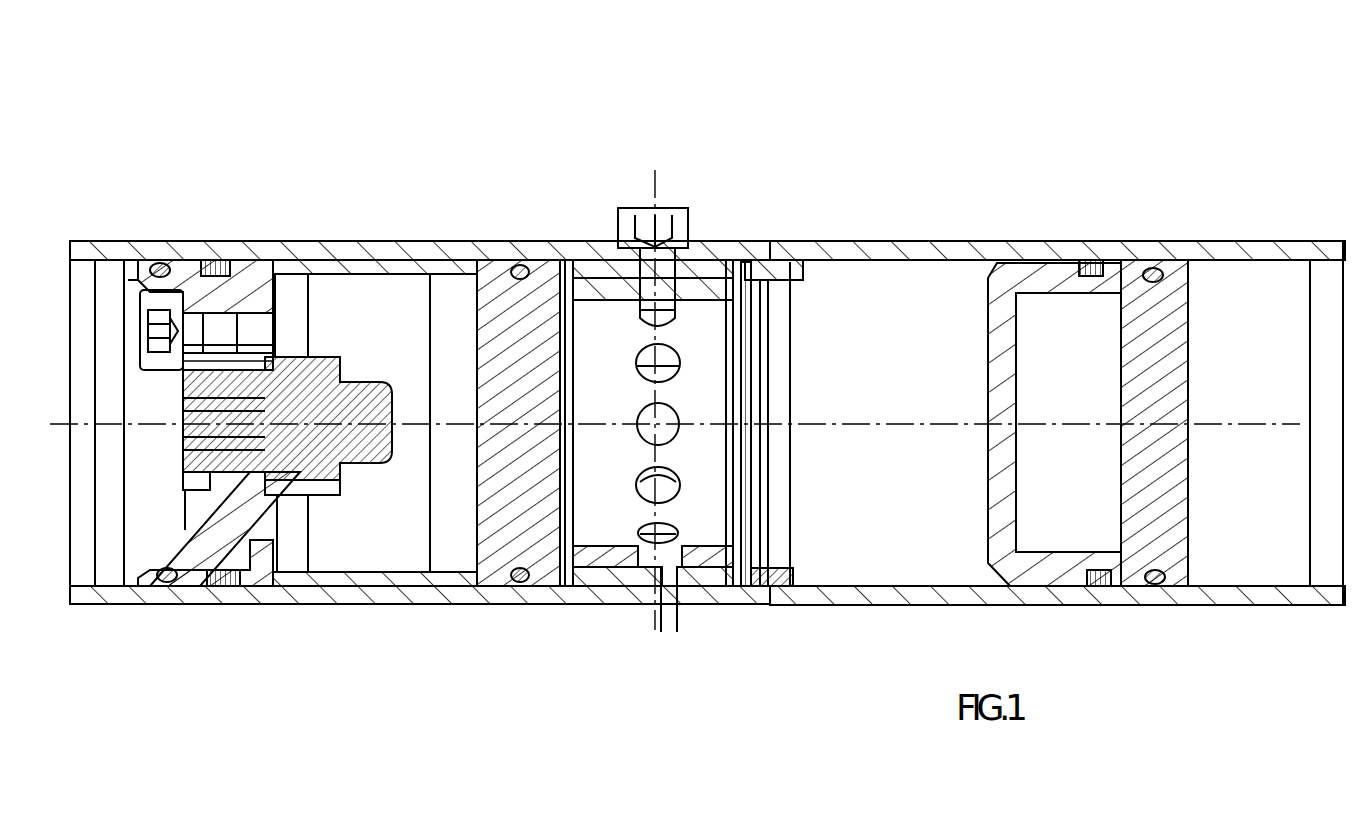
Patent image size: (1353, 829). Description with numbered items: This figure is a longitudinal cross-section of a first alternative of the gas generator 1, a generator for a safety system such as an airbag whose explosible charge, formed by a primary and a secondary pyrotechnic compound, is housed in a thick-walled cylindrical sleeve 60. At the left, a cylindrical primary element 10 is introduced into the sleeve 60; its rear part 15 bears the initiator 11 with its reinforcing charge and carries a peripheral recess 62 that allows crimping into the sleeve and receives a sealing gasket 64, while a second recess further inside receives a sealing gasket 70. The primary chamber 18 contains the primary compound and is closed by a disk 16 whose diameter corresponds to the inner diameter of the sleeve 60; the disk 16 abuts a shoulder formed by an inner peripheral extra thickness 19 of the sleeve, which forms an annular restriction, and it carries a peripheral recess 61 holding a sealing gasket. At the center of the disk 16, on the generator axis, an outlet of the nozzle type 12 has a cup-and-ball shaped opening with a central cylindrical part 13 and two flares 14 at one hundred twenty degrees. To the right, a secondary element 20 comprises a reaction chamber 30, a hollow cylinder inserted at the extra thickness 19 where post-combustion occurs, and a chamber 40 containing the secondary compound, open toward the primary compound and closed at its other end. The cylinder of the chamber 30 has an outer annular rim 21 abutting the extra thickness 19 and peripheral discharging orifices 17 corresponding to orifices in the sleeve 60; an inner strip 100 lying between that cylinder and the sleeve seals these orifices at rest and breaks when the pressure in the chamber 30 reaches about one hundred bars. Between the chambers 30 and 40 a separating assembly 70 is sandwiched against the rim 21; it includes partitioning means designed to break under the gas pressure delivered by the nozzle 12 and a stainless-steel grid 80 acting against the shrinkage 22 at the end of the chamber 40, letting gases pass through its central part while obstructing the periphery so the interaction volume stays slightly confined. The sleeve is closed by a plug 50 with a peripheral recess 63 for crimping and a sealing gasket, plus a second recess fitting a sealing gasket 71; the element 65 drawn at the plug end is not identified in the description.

The gas generator 1 is at (697, 436).
The primary element 10 is at (363, 535).
The initiator 11 is at (187, 455).
The nozzle 12 is at (470, 410).
The central cylindrical part 13 is at (527, 413).
The flares 14 is at (468, 438).
The rear part 15 is at (240, 548).
The disk 16 is at (470, 470).
The discharging orifices 17 is at (612, 275).
The primary chamber 18 is at (345, 300).
The inner peripheral extra thickness 19 is at (646, 355).
The secondary element 20 is at (887, 555).
The outer annular rim 21 is at (727, 600).
The shrinkage 22 is at (767, 600).
The reaction chamber 30 is at (700, 338).
The chamber containing the secondary compound 40 is at (902, 325).
The plug 50 is at (1092, 340).
The sleeve 60 is at (215, 258).
The peripheral recess 61 is at (520, 258).
The peripheral recess 62 is at (193, 255).
The peripheral recess 63 is at (1163, 262).
The sealing gasket 64 is at (152, 258).
The end wall 65 is at (1153, 282).
The separating assembly 70 is at (228, 258).
The sealing gasket 71 is at (1090, 262).
The grid 80 is at (793, 330).
The inner strip 100 is at (684, 623).